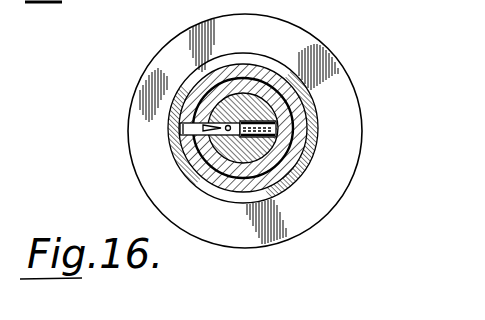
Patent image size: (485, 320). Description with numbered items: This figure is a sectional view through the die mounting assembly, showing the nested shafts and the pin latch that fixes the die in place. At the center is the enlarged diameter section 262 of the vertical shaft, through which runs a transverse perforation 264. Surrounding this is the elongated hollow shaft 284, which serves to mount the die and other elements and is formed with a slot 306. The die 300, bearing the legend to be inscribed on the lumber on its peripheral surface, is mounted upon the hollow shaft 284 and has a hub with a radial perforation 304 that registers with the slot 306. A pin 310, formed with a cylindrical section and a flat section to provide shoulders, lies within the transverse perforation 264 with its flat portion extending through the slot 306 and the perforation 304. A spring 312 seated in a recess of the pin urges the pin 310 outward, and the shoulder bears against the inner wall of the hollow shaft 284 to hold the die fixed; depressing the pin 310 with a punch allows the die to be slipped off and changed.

The die 300 is at (161, 50).
The slot 306 is at (174, 108).
The pin 310 is at (222, 127).
The radial perforation 304 is at (180, 131).
The spring 312 is at (187, 137).
The hollow shaft 284 is at (283, 106).
The transverse perforation 264 is at (273, 134).
The enlarged diameter section 262 is at (272, 153).